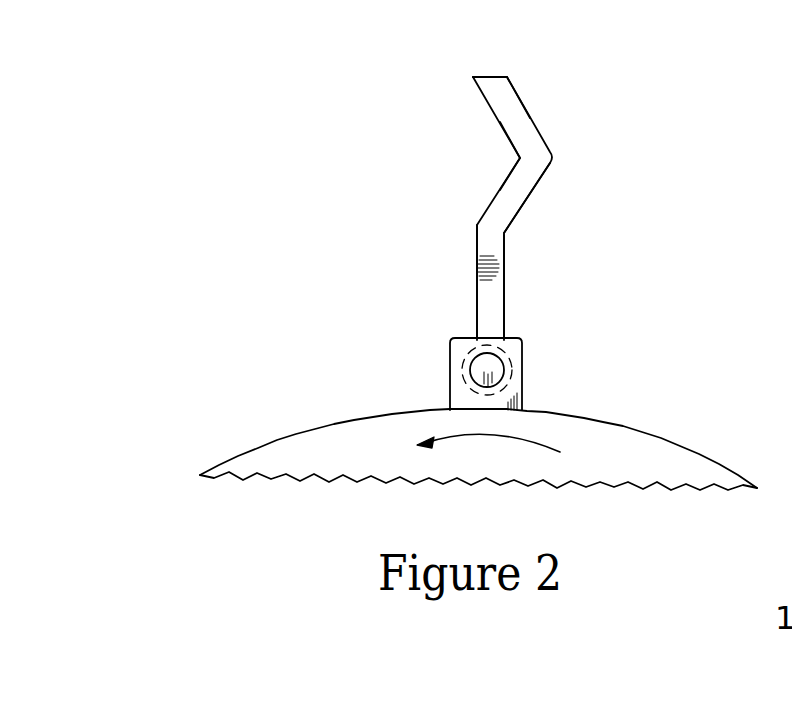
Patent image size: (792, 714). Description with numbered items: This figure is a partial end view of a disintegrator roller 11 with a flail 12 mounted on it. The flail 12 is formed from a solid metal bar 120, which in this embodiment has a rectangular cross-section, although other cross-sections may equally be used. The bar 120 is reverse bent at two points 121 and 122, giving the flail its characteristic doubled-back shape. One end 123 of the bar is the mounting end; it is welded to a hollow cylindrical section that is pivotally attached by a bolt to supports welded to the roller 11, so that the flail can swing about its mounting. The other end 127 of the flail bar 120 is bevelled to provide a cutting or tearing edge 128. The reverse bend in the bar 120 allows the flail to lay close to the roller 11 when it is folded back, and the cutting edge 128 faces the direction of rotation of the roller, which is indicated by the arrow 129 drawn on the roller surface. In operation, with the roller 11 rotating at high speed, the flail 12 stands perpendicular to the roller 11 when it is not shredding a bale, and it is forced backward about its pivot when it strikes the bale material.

The roller 11 is at (623, 430).
The flail 12 is at (694, 188).
The solid metal bar 120 is at (527, 203).
The reverse bend point 121 is at (518, 158).
The reverse bend point 122 is at (505, 238).
The end of the bar 123 is at (500, 338).
The other end of the flail bar 127 is at (518, 93).
The cutting or tearing edge 128 is at (473, 77).
The arrow 129 is at (494, 440).